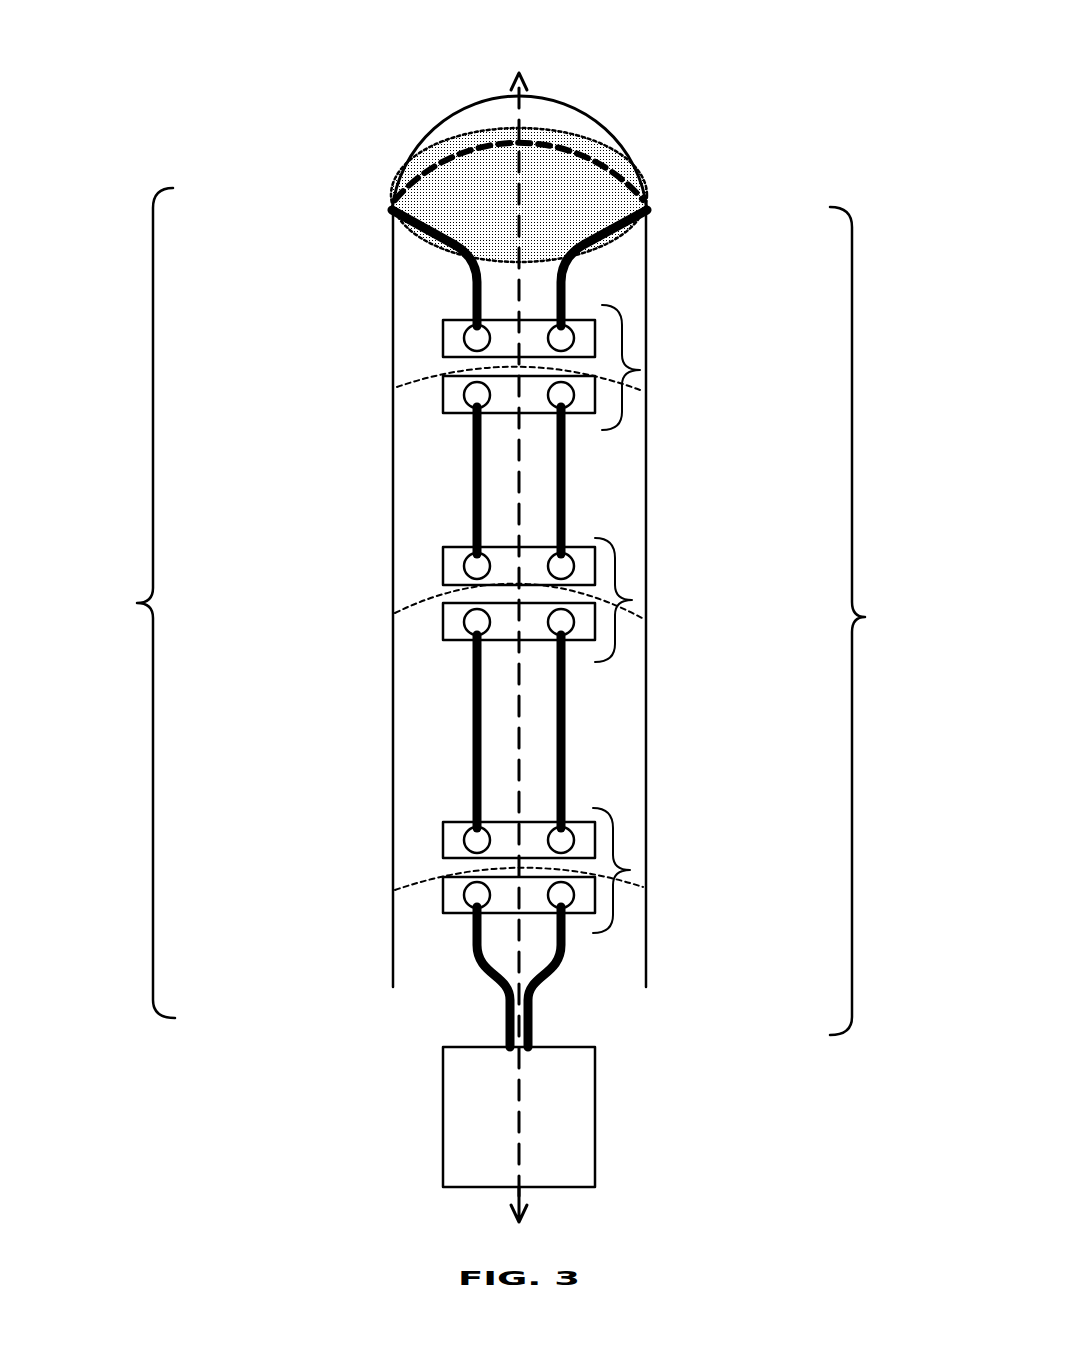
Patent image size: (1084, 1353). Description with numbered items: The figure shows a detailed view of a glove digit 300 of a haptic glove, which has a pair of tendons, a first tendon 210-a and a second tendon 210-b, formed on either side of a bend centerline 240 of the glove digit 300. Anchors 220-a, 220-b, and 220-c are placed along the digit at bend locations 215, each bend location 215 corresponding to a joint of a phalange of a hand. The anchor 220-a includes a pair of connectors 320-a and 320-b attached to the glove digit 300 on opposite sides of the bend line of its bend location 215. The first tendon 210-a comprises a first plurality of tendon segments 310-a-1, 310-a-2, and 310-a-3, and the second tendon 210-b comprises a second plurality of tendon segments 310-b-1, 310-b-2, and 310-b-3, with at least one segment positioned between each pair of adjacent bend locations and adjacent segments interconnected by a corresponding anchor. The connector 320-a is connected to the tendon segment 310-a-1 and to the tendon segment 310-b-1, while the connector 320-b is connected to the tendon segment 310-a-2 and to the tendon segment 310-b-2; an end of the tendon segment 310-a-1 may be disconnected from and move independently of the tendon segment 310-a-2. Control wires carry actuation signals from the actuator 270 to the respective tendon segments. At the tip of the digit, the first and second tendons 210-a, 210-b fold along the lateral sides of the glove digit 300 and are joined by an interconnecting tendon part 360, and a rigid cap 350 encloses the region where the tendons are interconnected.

The glove digit 300 is at (127, 70).
The interconnecting tendon part 360 is at (447, 157).
The bend centerline 240 is at (516, 620).
The rigid cap 350 is at (587, 192).
The tendon segment 310-a-1 is at (413, 228).
The tendon segment 310-b-1 is at (623, 232).
The connector 320-a is at (452, 348).
The connector 320-b is at (452, 397).
The anchor 220-a is at (651, 367).
The bend location 215 is at (632, 380).
The tendon segment 310-a-2 is at (473, 483).
The tendon segment 310-b-2 is at (567, 477).
The anchor 220-b is at (567, 600).
The tendon segment 310-a-3 is at (470, 725).
The tendon segment 310-b-3 is at (567, 667).
The anchor 220-c is at (567, 870).
The first tendon 210-a is at (276, 617).
The second tendon 210-b is at (740, 627).
The actuator 270 is at (472, 1072).